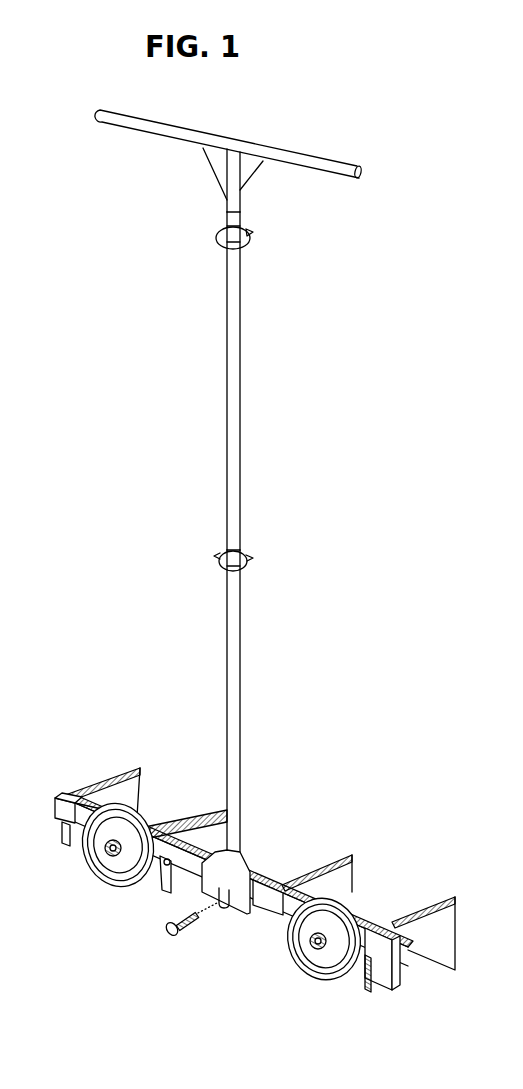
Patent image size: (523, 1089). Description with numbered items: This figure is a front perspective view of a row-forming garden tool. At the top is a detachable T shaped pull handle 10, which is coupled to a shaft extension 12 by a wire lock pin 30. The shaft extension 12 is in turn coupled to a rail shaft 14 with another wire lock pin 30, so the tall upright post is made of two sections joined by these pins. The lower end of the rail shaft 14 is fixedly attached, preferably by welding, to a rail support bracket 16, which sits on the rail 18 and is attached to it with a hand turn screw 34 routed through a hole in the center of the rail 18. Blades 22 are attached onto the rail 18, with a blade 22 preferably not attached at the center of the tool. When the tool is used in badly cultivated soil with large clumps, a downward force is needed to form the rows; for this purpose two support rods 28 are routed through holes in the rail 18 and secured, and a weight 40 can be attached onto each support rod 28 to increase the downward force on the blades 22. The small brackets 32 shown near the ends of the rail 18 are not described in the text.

The T shaped pull handle 10 is at (282, 153).
The shaft extension 12 is at (230, 373).
The rail shaft 14 is at (230, 700).
The rail support bracket 16 is at (243, 848).
The rail 18 is at (60, 798).
The blade 22 is at (127, 767).
The support rod 28 is at (92, 863).
The wire lock pin 30 is at (212, 226).
The mounting bracket 32 is at (163, 888).
The hand turn screw 34 is at (173, 933).
The weight 40 is at (121, 843).